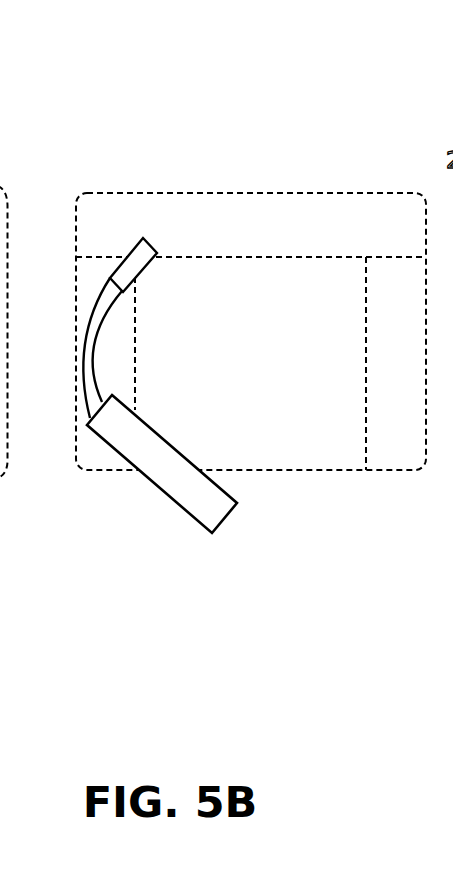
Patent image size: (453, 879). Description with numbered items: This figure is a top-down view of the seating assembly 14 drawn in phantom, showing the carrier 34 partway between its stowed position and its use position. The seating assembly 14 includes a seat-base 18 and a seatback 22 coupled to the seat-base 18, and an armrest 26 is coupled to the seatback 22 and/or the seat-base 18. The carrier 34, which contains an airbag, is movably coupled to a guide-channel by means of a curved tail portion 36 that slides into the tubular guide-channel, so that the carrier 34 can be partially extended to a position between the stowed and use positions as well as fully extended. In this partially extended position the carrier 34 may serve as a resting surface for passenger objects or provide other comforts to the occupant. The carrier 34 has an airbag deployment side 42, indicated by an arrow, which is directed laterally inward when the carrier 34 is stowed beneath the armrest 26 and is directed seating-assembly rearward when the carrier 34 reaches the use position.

The seating assembly 14 is at (197, 122).
The seatback 22 is at (317, 217).
The seat-base 18 is at (310, 433).
The armrest 26 is at (95, 284).
The tail portion 36 is at (85, 362).
The carrier 34 is at (178, 485).
The airbag deployment side 42 is at (186, 451).